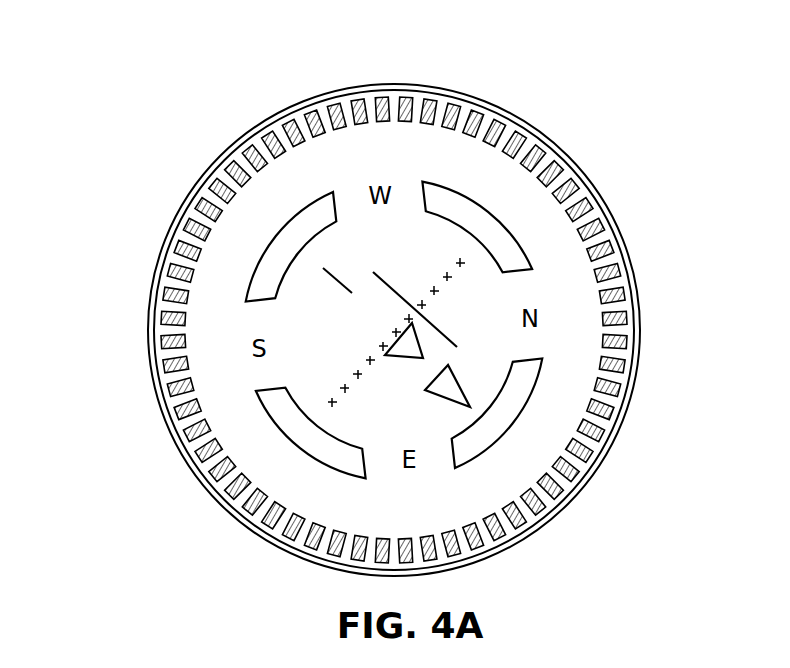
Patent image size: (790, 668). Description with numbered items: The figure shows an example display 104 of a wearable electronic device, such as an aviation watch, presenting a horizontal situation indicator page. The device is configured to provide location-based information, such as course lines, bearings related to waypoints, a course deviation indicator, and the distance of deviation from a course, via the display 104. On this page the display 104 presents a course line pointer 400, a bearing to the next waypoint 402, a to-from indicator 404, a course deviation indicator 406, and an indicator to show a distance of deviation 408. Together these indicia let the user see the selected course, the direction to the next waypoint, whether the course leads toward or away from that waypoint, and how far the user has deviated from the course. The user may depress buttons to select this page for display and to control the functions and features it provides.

The display 104 is at (255, 108).
The bearing to the next waypoint 402 is at (567, 158).
The course deviation indicator 406 is at (459, 346).
The indicator to show a distance of deviation 408 is at (337, 381).
The to-from indicator 404 is at (409, 358).
The course line pointer 400 is at (471, 395).